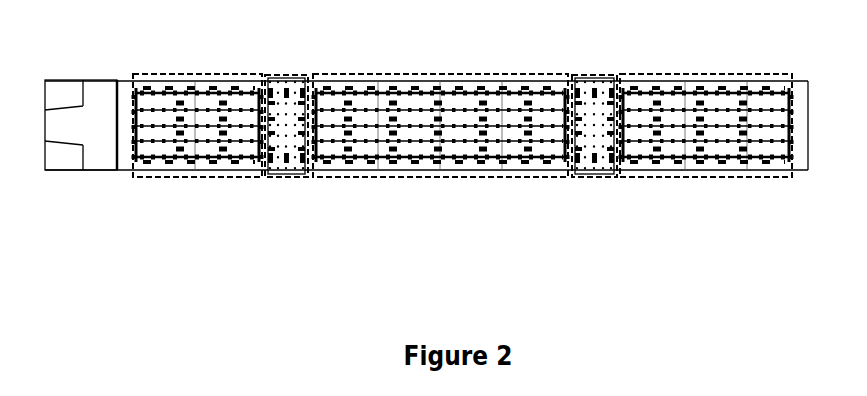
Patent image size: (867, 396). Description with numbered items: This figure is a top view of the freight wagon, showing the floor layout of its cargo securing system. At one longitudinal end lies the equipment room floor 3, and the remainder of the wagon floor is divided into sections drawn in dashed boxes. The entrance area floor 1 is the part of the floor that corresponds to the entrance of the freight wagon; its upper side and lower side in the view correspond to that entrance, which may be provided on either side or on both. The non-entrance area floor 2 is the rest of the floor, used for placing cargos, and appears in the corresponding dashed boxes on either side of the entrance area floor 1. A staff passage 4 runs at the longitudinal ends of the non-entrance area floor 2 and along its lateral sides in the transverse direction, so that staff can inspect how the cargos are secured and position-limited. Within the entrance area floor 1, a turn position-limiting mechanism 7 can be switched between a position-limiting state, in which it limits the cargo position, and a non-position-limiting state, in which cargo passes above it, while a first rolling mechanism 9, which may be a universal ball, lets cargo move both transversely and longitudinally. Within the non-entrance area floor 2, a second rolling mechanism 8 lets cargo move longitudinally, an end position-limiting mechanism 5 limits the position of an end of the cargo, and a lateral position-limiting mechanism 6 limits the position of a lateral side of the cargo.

The entrance area floor 1 is at (441, 112).
The non-entrance area floor 2 is at (462, 112).
The equipment room floor 3 is at (81, 125).
The staff passage 4 is at (210, 86).
The end position-limiting mechanism 5 is at (135, 148).
The lateral position-limiting mechanism 6 is at (168, 157).
The turn position-limiting mechanism 7 is at (222, 148).
The second rolling mechanism 8 is at (327, 143).
The first rolling mechanism 9 is at (278, 155).